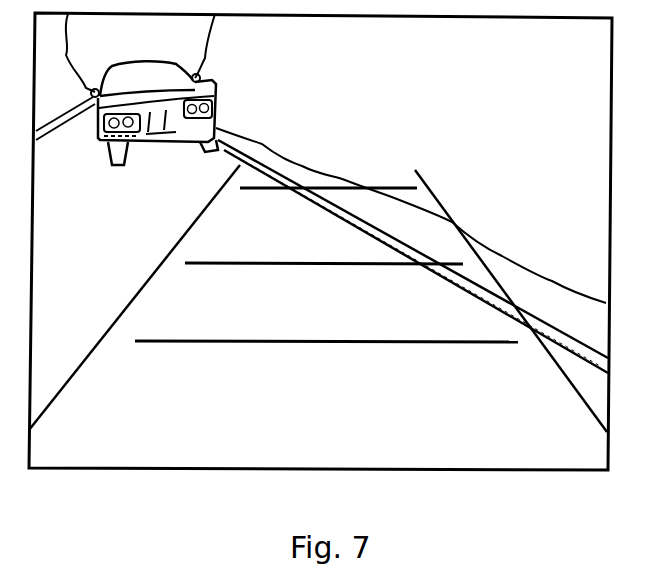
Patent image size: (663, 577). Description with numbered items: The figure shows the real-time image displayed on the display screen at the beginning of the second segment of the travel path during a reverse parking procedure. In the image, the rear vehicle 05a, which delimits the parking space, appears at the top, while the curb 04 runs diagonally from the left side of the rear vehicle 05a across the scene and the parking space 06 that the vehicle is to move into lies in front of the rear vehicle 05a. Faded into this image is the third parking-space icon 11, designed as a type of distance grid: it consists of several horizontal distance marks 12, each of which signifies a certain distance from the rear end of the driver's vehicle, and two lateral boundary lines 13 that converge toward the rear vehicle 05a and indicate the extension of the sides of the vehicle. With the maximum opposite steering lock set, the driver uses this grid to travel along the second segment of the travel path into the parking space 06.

The curb 04 is at (50, 136).
The rear vehicle 05a is at (200, 86).
The parking space 06 is at (228, 248).
The third parking-space icon 11 is at (150, 298).
The distance marks 12 is at (265, 190).
The lateral boundary lines 13 is at (90, 350).